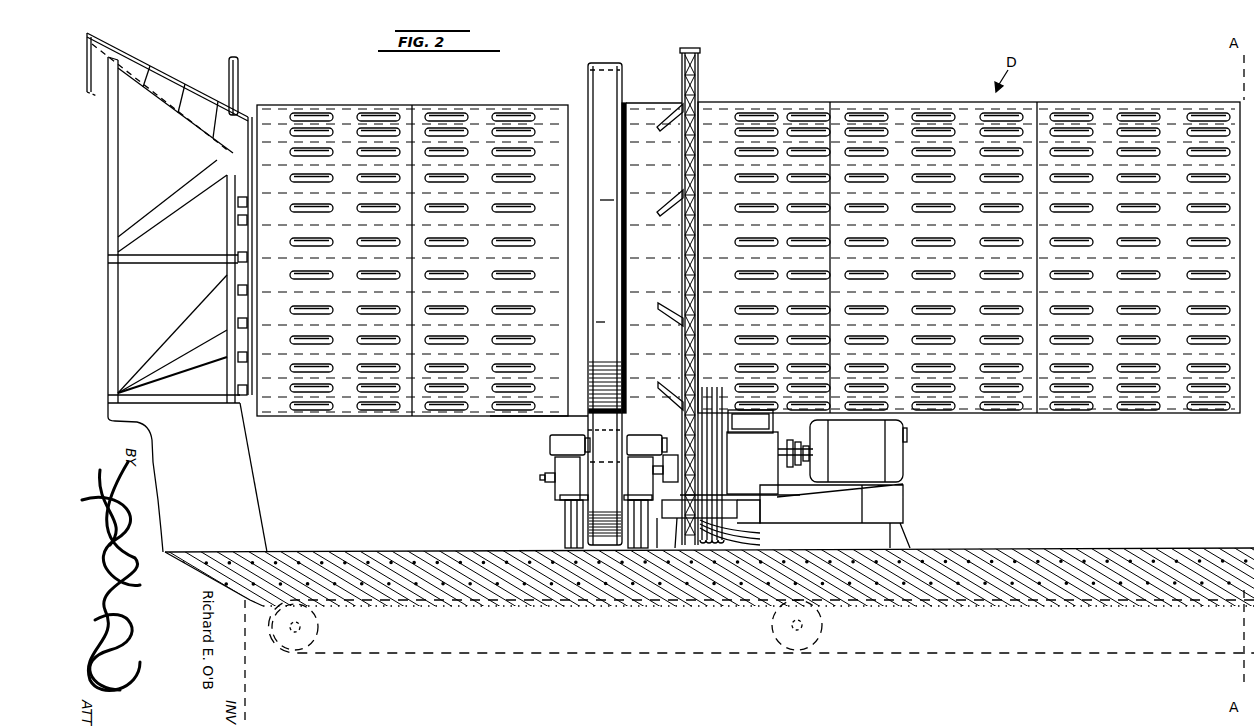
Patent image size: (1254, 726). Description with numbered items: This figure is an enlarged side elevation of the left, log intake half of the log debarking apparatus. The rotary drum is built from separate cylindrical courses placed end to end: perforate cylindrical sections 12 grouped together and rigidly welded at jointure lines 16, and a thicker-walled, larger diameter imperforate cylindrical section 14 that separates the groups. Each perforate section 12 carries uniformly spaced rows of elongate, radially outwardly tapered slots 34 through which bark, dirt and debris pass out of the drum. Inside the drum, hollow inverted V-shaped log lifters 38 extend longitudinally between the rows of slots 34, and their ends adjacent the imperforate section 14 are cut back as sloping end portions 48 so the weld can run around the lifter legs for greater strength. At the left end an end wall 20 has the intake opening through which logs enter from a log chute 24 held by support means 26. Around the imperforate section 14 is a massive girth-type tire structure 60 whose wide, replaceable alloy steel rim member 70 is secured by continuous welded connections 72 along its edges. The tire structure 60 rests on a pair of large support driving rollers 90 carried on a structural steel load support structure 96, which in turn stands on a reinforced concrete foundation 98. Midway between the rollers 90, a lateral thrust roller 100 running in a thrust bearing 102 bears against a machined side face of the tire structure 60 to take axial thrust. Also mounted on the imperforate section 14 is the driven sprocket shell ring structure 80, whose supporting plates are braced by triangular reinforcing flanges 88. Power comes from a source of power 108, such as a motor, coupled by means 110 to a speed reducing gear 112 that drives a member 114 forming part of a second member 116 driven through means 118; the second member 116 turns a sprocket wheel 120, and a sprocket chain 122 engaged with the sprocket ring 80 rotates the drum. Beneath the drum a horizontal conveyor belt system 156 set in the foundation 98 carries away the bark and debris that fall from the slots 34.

The cylindrical section 12 is at (344, 105).
The imperforate cylindrical section 14 is at (638, 103).
The jointure line 16 is at (412, 105).
The end wall 20 is at (243, 100).
The log chute 24 is at (145, 128).
The support means 26 is at (100, 230).
The slot 34 is at (313, 113).
The log lifter 38 is at (575, 180).
The sloping end portion 48 is at (575, 195).
The tire structure 60 is at (610, 56).
The tire rim member 70 is at (603, 322).
The welded connection 72 is at (604, 250).
The sprocket shell ring structure 80 is at (706, 67).
The triangular reinforcing flange 88 is at (672, 125).
The support driving roller 90 is at (598, 430).
The load support structure 96 is at (573, 530).
The foundation 98 is at (992, 562).
The lateral thrust roller 100 is at (560, 443).
The thrust bearing 102 is at (563, 467).
The source of power 108 is at (868, 446).
The coupling means 110 is at (800, 438).
The speed reducing gear 112 is at (760, 488).
The driving member 114 is at (727, 456).
The second member 116 is at (728, 521).
The drive means 118 is at (745, 532).
The sprocket wheel 120 is at (688, 446).
The sprocket chain 122 is at (683, 258).
The horizontal conveyor belt system 156 is at (404, 562).